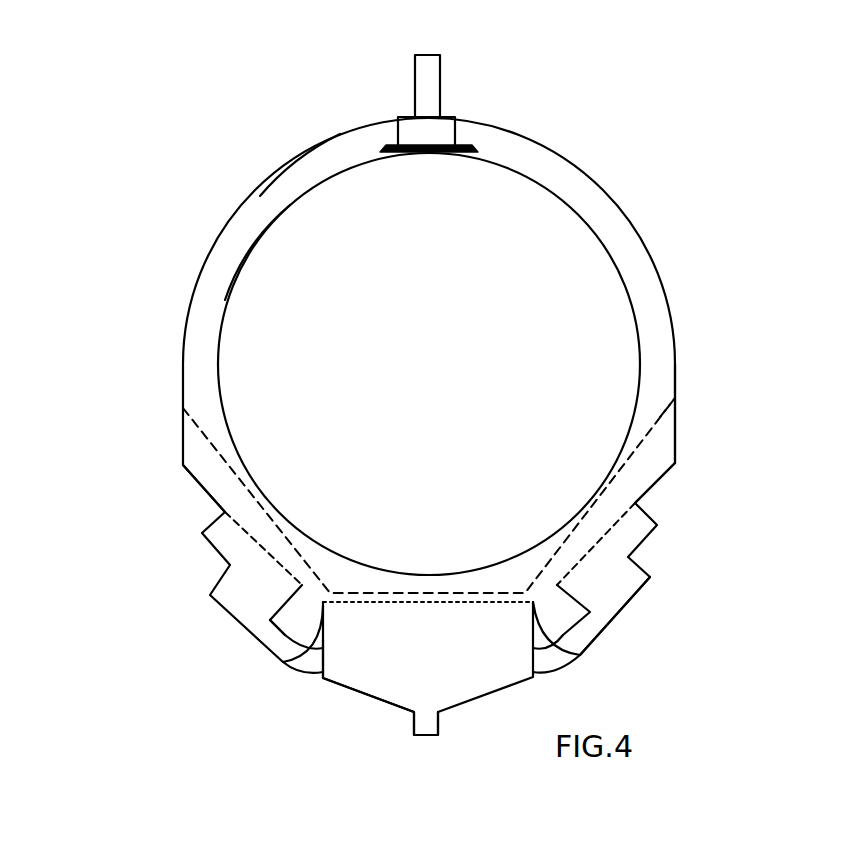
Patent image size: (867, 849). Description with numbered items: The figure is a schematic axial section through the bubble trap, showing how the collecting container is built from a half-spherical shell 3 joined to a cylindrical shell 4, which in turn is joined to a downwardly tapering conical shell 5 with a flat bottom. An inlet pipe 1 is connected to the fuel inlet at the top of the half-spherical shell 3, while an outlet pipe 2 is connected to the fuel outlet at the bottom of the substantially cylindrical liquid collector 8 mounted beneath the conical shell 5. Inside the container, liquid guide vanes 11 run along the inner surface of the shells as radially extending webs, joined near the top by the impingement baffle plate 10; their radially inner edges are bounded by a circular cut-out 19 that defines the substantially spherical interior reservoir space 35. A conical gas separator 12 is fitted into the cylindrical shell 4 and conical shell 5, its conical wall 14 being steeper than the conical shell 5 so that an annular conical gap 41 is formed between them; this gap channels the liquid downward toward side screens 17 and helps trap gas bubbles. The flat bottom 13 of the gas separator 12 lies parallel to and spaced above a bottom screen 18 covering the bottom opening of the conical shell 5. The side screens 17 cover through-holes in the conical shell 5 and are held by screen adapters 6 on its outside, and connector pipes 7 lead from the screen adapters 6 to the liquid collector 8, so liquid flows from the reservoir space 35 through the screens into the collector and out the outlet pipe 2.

The inlet pipe 1 is at (433, 78).
The outlet pipe 2 is at (412, 723).
The half-spherical shell 3 is at (640, 211).
The cylindrical shell 4 is at (677, 378).
The conical shell 5 is at (652, 493).
The screen adapters 6 is at (260, 583).
The connector pipes 7 is at (283, 662).
The liquid collector 8 is at (380, 667).
The impingement baffle plate 10 is at (467, 140).
The liquid guide vanes 11 is at (300, 178).
The conical gas separator 12 is at (583, 518).
The flat bottom 13 is at (580, 655).
The conical wall 14 is at (660, 418).
The side screens 17 is at (250, 533).
The bottom screen 18 is at (285, 630).
The circular cut-out 19 is at (247, 255).
The interior reservoir space 35 is at (435, 355).
The annular conical gap 41 is at (208, 470).